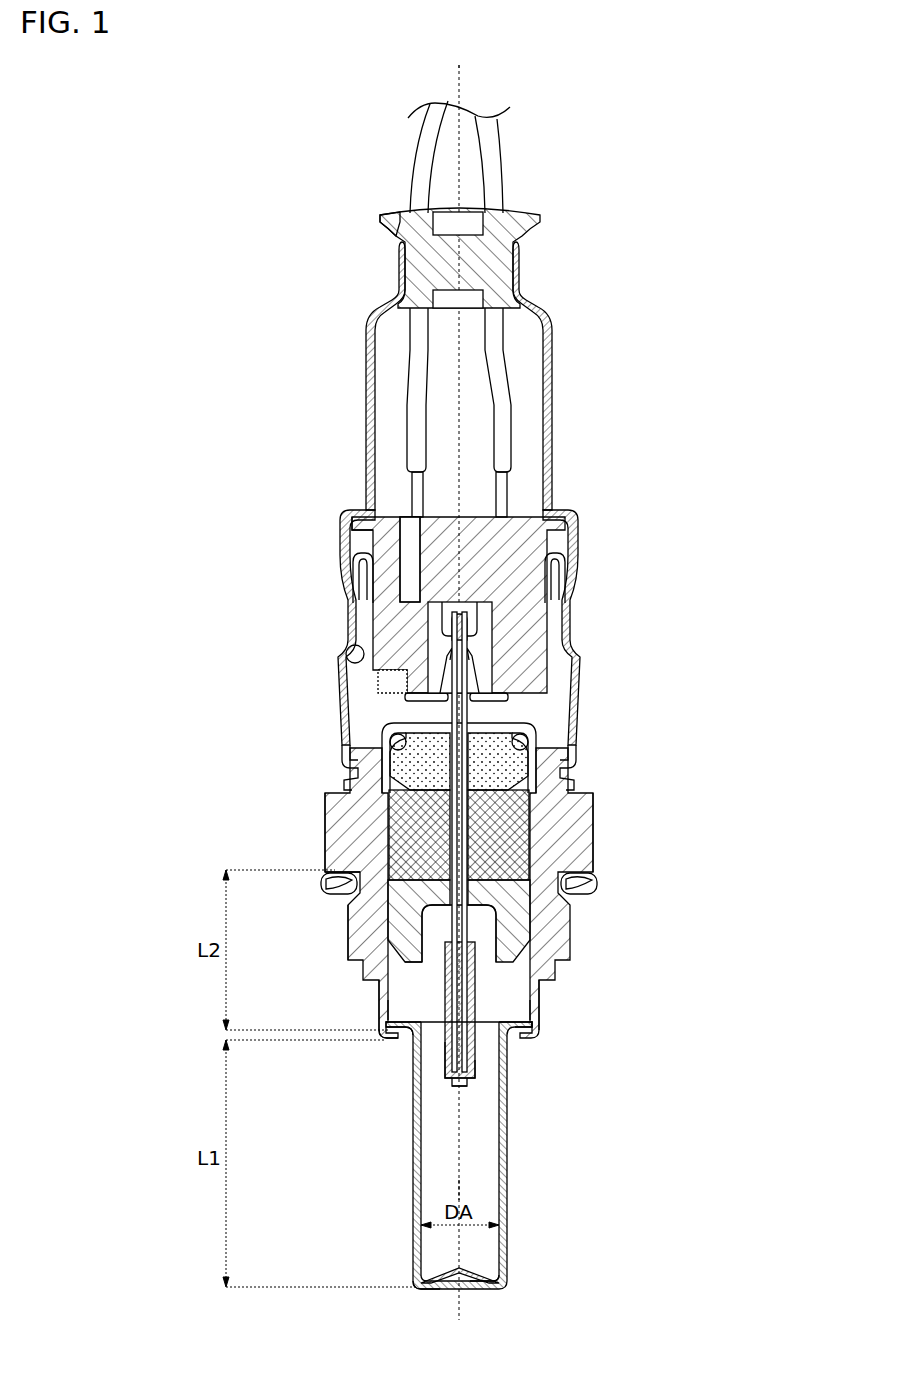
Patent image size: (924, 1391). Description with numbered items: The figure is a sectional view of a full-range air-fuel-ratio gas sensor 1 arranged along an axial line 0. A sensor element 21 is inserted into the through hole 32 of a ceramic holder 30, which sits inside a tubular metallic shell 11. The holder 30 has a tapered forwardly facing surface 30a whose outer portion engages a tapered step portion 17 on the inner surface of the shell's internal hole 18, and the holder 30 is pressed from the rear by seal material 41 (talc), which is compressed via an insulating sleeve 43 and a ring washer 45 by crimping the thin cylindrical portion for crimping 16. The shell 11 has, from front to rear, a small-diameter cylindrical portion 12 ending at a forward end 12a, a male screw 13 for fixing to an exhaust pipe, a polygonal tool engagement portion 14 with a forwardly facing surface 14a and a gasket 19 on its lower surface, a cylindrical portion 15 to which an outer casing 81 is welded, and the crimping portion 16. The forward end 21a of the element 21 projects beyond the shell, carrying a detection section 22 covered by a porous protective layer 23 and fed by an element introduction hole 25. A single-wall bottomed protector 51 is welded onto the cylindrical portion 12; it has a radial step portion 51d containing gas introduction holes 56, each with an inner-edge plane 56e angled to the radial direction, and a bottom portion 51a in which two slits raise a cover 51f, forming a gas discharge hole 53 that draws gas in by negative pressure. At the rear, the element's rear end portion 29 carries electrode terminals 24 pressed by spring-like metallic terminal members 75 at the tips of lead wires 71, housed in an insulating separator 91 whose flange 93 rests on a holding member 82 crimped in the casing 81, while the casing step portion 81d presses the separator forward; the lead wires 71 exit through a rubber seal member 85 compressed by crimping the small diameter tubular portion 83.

The gas sensor 1 is at (287, 139).
The lead wires 71 is at (420, 170).
The seal member 85 is at (385, 222).
The small diameter tubular portion 83 is at (400, 272).
The outer casing 81 is at (333, 645).
The step portion 81d is at (348, 515).
The flange 93 is at (357, 548).
The separator 91 is at (548, 530).
The rear end portion 29 is at (400, 586).
The metallic terminal members 75 is at (453, 628).
The electrode terminals 24 is at (445, 658).
The holding member 82 is at (362, 680).
The cylindrical portion for crimping 16 is at (388, 722).
The ring washer 45 is at (392, 744).
The sleeve 43 is at (520, 760).
The cylindrical portion 15 is at (345, 770).
The seal material 41 is at (392, 812).
The metallic shell 11 is at (602, 831).
The tool engagement portion 14 is at (330, 848).
The through hole 32 is at (565, 860).
The forwardly facing surface 14a is at (330, 875).
The gasket 19 is at (335, 888).
The ceramic holder 30 is at (522, 918).
The screw 13 is at (385, 935).
The step portion 17 is at (500, 925).
The forwardly facing surface 30a is at (396, 960).
The sensor element 21 is at (491, 992).
The cylindrical portion 12 is at (383, 1003).
The internal hole 18 is at (496, 1000).
The forward end 12a is at (384, 1034).
The plane 56e is at (534, 1026).
The gas introduction holes 56 is at (396, 1035).
The detection section 22 is at (472, 1052).
The step portion 51d is at (411, 1048).
The porous protective layer 23 is at (464, 1072).
The element introduction hole 25 is at (450, 1060).
The protector 51 is at (411, 1150).
The forward end 21a is at (463, 1088).
The axial line 0 is at (462, 1195).
The cover 51f is at (472, 1276).
The bottom portion 51a is at (417, 1287).
The gas discharge hole 53 is at (466, 1290).